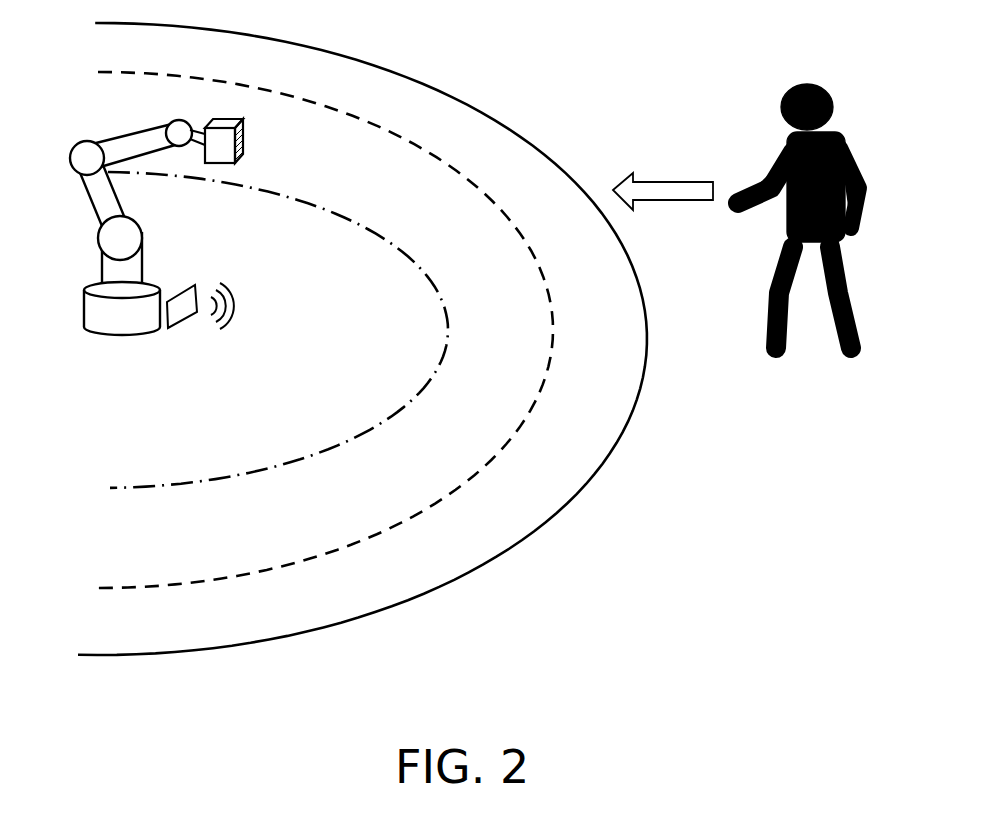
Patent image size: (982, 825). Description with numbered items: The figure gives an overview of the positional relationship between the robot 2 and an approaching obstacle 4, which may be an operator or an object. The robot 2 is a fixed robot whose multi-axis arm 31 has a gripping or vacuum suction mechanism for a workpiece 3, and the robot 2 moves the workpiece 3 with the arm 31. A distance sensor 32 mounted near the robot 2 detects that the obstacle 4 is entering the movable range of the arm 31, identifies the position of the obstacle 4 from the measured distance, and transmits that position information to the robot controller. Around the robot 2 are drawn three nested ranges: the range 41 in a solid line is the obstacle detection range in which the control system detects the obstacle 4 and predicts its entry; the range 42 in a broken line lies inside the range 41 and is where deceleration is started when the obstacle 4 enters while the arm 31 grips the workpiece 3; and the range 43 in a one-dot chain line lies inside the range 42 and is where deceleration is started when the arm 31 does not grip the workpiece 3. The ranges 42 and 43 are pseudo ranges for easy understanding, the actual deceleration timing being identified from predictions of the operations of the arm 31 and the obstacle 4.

The robot 2 is at (132, 231).
The workpiece 3 is at (245, 137).
The arm 31 is at (112, 317).
The distance sensor 32 is at (185, 308).
The obstacle 4 is at (830, 100).
The range 41 is at (502, 125).
The range 42 is at (423, 141).
The range 43 is at (415, 242).